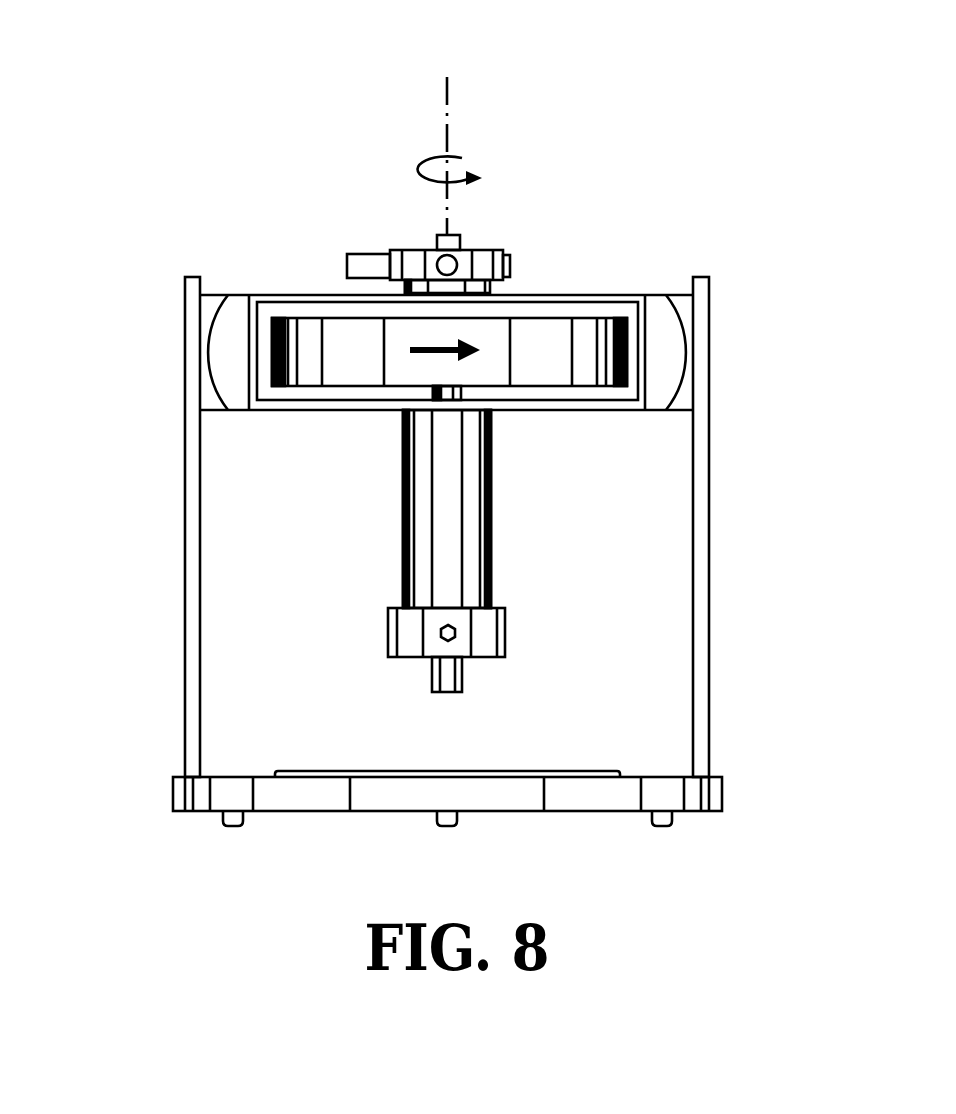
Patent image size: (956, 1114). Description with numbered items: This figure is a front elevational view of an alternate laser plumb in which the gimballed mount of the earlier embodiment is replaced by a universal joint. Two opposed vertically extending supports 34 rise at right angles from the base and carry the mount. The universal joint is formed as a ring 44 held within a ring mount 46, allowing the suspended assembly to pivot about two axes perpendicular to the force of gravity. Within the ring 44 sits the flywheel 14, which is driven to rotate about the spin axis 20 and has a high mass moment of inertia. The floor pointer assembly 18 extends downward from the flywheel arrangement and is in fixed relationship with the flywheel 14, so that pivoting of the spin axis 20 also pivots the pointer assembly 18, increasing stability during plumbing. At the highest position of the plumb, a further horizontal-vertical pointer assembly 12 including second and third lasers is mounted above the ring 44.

The horizontal-vertical pointer assembly 12 is at (415, 255).
The flywheel 14 is at (548, 335).
The floor pointer assembly 18 is at (428, 562).
The spin axis 20 is at (448, 98).
The vertically extending supports 34 is at (188, 670).
The ring 44 is at (628, 293).
The ring mount 46 is at (228, 332).